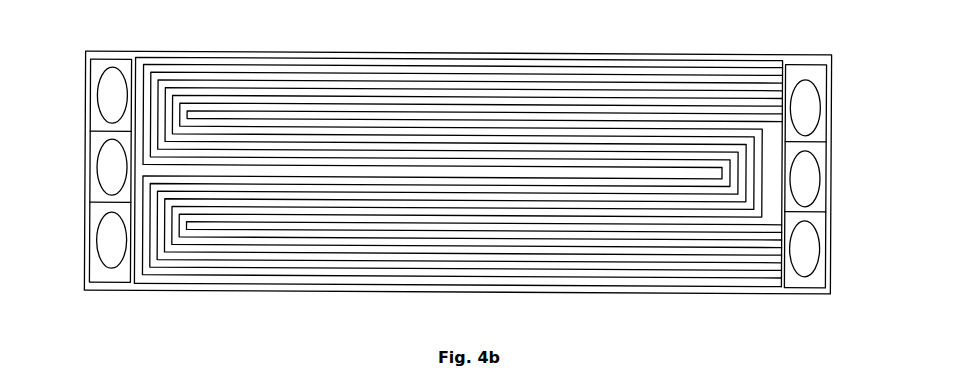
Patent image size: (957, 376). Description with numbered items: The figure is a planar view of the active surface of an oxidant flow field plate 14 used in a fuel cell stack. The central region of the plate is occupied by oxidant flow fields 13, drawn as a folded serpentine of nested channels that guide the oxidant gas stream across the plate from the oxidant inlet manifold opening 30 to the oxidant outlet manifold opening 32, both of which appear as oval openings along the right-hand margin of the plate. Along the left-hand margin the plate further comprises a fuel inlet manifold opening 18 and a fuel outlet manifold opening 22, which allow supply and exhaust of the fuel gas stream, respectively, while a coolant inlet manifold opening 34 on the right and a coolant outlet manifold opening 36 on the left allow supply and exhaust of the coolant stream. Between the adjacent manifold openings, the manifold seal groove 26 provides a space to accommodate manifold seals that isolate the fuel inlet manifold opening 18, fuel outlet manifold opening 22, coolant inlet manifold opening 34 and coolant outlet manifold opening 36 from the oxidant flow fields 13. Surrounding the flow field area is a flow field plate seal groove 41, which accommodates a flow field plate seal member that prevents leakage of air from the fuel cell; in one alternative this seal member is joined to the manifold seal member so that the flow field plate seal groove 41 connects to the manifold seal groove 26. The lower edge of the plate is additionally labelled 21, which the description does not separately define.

The oxidant flow fields 13 is at (579, 267).
The oxidant flow field plate 14 is at (260, 304).
The fuel inlet manifold opening 18 is at (102, 106).
The plate bottom edge 21 is at (507, 286).
The fuel outlet manifold opening 22 is at (100, 245).
The manifold seal groove 26 is at (98, 138).
The oxidant inlet manifold opening 30 is at (817, 109).
The oxidant outlet manifold opening 32 is at (816, 250).
The coolant inlet manifold opening 34 is at (817, 170).
The coolant outlet manifold opening 36 is at (102, 175).
The flow field plate seal groove 41 is at (264, 54).